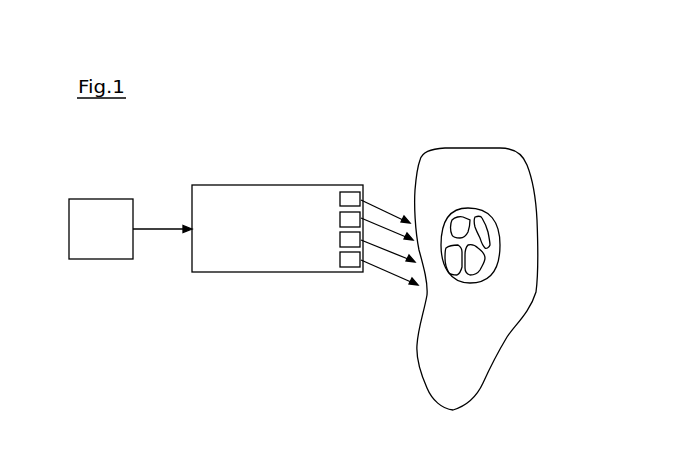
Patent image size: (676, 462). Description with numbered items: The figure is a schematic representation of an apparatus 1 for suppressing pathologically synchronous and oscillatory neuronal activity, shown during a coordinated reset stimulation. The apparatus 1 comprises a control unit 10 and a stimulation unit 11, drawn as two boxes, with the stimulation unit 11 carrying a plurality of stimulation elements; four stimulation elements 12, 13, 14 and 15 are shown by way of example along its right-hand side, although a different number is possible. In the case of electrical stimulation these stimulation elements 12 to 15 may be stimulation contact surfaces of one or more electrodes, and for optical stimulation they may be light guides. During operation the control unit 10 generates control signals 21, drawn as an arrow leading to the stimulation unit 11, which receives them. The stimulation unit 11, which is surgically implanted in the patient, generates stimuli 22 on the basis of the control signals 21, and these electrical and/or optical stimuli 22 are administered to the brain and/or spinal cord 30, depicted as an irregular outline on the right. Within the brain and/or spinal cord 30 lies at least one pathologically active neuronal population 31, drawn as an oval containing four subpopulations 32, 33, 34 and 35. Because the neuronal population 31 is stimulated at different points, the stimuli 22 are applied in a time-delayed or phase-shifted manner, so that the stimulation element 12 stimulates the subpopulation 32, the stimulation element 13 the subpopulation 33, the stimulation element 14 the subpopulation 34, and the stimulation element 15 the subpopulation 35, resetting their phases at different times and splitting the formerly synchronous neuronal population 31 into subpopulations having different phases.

The apparatus 1 is at (287, 160).
The control unit 10 is at (96, 199).
The stimulation unit 11 is at (227, 185).
The stimulation element 12 is at (340, 199).
The stimulation element 13 is at (340, 219).
The stimulation element 14 is at (340, 240).
The stimulation element 15 is at (340, 260).
The control signals 21 is at (157, 228).
The stimuli 22 is at (382, 205).
The brain and/or spinal cord 30 is at (443, 148).
The neuronal population 31 is at (472, 208).
The subpopulation 32 is at (453, 220).
The subpopulation 33 is at (489, 228).
The subpopulation 34 is at (480, 276).
The subpopulation 35 is at (455, 273).